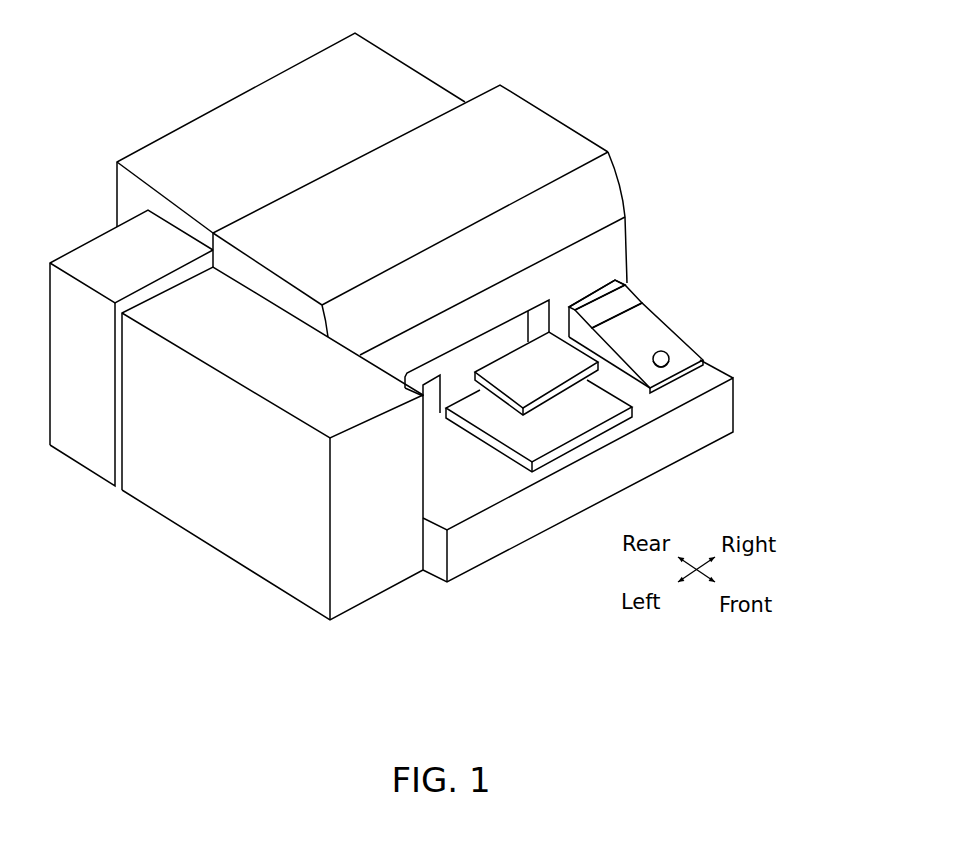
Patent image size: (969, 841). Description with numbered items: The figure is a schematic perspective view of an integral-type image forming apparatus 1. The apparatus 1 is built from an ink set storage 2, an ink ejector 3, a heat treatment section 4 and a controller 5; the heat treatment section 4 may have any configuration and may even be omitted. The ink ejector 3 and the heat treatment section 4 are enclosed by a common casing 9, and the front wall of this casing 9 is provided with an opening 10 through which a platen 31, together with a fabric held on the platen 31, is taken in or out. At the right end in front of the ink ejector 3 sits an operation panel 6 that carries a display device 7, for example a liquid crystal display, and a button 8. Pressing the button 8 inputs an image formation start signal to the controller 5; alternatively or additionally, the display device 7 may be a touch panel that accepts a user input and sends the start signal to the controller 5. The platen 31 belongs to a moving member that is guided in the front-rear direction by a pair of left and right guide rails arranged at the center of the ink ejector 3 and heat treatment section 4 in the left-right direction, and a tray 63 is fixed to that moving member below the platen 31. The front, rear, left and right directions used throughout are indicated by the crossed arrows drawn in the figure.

The image forming apparatus 1 is at (652, 23).
The ink set storage 2 is at (435, 203).
The ink ejector 3 is at (265, 443).
The heat treatment section 4 is at (291, 133).
The controller 5 is at (126, 348).
The operation panel 6 is at (657, 325).
The display device 7 is at (621, 292).
The button 8 is at (699, 339).
The casing 9 is at (632, 165).
The opening 10 is at (549, 300).
The platen 31 is at (518, 400).
The tray 63 is at (539, 499).